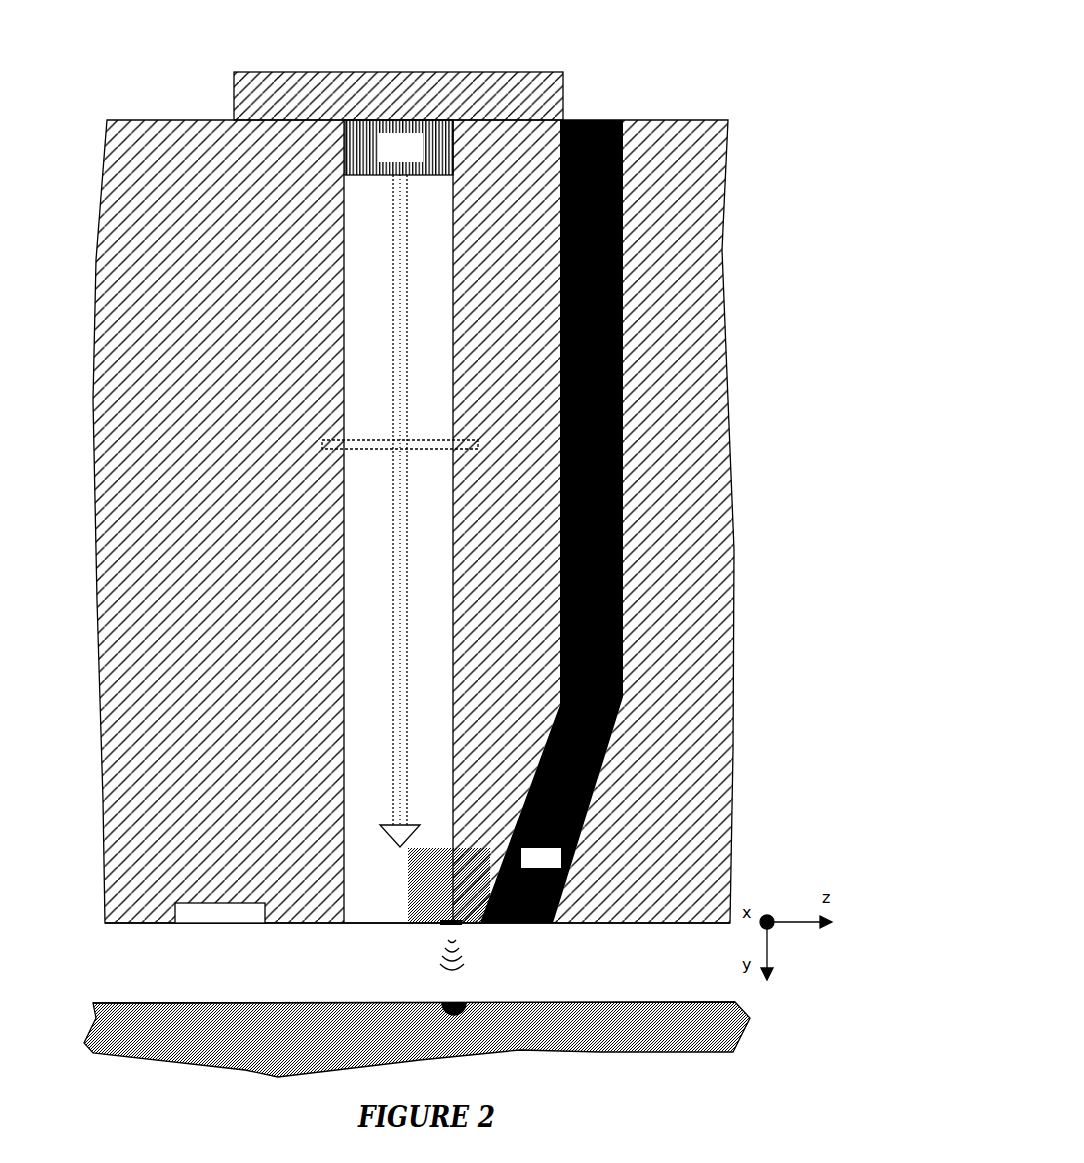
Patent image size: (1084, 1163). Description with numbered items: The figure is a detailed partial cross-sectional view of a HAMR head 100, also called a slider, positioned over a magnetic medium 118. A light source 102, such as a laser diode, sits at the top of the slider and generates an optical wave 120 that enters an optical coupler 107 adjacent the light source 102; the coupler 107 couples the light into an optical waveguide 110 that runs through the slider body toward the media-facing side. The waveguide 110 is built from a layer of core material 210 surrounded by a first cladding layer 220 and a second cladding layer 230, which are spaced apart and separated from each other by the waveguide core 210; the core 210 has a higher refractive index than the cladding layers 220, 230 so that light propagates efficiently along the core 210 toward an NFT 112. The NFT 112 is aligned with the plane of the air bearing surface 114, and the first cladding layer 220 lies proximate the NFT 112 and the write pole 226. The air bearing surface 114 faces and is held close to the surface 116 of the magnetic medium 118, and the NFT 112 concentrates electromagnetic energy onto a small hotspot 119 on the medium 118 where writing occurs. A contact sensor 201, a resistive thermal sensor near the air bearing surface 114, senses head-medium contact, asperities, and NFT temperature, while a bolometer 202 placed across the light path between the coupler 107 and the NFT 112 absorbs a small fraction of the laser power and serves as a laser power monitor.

The HAMR head 100 is at (710, 88).
The light source 102 is at (266, 72).
The optical coupler 107 is at (399, 147).
The optical waveguide 110 is at (100, 186).
The NFT 112 is at (429, 925).
The air bearing surface 114 is at (158, 926).
The surface of magnetic medium 116 is at (680, 1002).
The magnetic medium 118 is at (695, 1040).
The hotspot 119 is at (455, 1006).
The optical wave 120 is at (393, 641).
The contact sensor 201 is at (220, 900).
The bolometer 202 is at (324, 443).
The core layer 210 is at (442, 653).
The first cladding layer 220 is at (593, 521).
The write pole 226 is at (551, 521).
The second cladding layer 230 is at (218, 521).